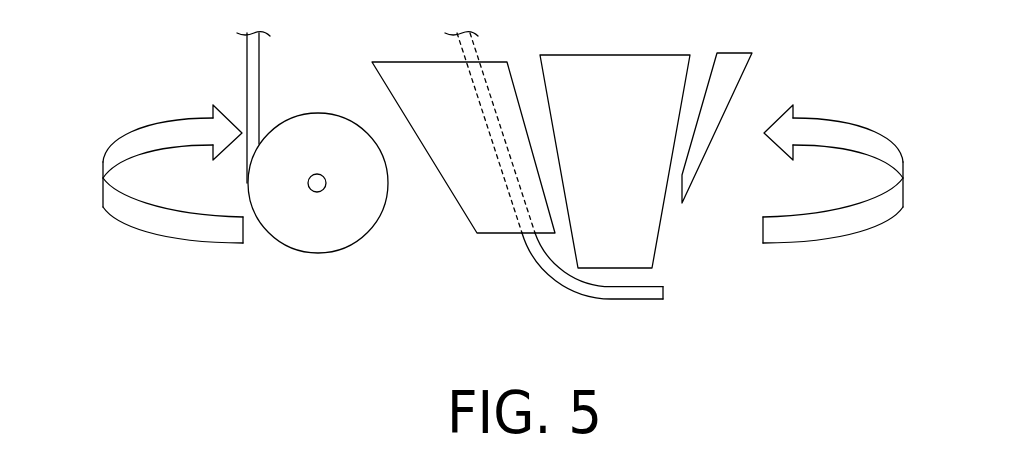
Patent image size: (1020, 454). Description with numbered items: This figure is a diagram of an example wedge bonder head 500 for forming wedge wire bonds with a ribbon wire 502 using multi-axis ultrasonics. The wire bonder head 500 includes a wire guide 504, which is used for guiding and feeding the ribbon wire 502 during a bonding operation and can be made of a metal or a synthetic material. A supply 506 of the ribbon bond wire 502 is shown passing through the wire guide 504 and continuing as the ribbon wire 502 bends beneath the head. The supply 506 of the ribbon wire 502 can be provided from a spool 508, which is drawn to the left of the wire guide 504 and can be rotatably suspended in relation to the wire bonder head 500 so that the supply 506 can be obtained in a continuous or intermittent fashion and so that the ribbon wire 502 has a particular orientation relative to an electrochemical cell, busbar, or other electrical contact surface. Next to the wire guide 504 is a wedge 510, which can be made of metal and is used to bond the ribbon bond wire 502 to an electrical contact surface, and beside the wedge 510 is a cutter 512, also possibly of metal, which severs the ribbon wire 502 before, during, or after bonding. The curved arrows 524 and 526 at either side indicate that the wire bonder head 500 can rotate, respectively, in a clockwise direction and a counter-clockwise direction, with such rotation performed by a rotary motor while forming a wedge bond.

The wedge bonder head 500 is at (815, 49).
The ribbon wire 502 is at (550, 277).
The wire guide 504 is at (460, 207).
The supply 506 is at (480, 118).
The spool 508 is at (348, 231).
The wedge 510 is at (657, 238).
The cutter 512 is at (715, 133).
The arrow 524 is at (103, 186).
The arrow 526 is at (889, 210).